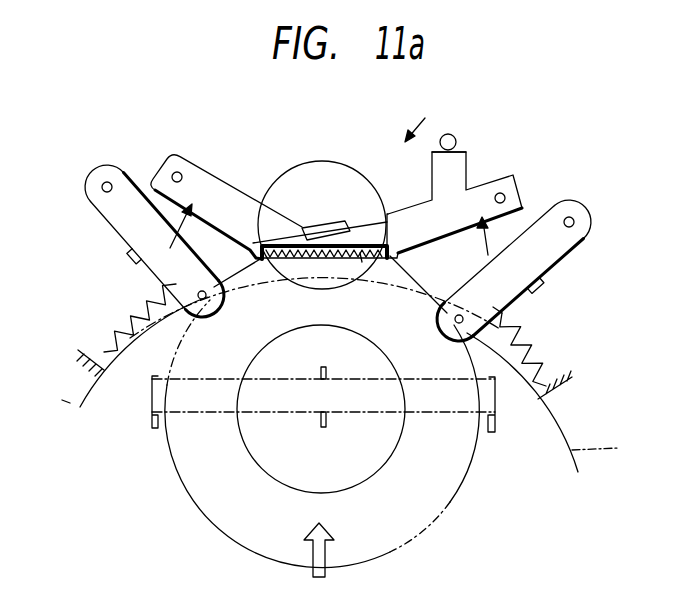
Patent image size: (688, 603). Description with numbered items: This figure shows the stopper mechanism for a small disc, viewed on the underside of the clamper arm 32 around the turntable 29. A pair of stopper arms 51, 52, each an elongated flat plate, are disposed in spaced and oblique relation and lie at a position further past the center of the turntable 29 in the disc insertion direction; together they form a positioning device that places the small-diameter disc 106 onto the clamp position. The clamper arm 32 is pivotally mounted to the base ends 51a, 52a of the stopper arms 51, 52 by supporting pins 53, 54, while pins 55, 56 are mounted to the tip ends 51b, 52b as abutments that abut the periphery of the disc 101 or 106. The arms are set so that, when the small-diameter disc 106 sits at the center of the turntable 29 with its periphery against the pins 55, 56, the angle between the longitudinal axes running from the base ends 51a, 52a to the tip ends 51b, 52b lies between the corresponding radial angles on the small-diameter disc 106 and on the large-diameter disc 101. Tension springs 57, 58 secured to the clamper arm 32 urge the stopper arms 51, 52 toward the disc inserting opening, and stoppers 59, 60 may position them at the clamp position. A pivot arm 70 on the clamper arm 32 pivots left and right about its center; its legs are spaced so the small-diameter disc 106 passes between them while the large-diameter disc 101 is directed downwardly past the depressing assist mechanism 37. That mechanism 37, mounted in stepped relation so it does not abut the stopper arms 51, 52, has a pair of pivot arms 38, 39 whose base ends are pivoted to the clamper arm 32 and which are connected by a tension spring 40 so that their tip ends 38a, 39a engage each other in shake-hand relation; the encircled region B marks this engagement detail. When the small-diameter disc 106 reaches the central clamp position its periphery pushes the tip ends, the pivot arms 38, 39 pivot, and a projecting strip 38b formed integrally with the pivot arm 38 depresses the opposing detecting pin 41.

The turntable 29 is at (377, 478).
The clamper arm 32 is at (80, 363).
The depressing assist mechanism 37 is at (426, 117).
The pivot arm 38 is at (416, 170).
The tip end 38a is at (310, 226).
The projecting strip 38b is at (458, 158).
The pivot arm 39 is at (240, 192).
The tip end 39a is at (362, 262).
The tension spring 40 is at (328, 258).
The detecting pin 41 is at (452, 134).
The stopper arm 51 is at (152, 271).
The base end 51a is at (110, 175).
The tip end 51b is at (198, 303).
The stopper arm 52 is at (525, 255).
The base end 52a is at (592, 226).
The tip end 52b is at (462, 300).
The supporting pin 53 is at (90, 192).
The supporting pin 54 is at (571, 214).
The pin 55 is at (202, 302).
The pin 56 is at (452, 322).
The tension spring 57 is at (132, 326).
The tension spring 58 is at (533, 377).
The stopper 59 is at (128, 262).
The stopper 60 is at (543, 287).
The pivot arm 70 is at (268, 413).
The large-diameter disc 101 is at (361, 384).
The small-diameter disc 106 is at (450, 502).
The detail B is at (332, 163).